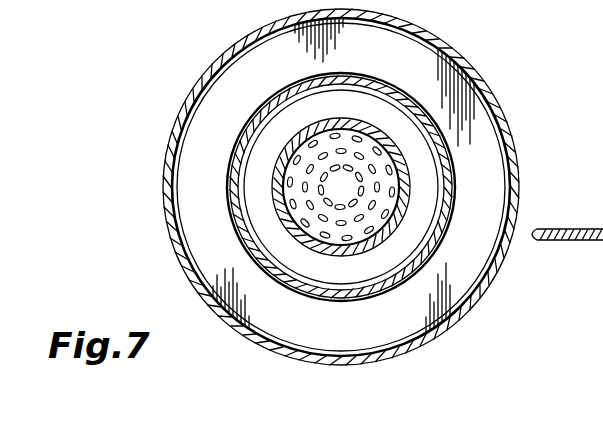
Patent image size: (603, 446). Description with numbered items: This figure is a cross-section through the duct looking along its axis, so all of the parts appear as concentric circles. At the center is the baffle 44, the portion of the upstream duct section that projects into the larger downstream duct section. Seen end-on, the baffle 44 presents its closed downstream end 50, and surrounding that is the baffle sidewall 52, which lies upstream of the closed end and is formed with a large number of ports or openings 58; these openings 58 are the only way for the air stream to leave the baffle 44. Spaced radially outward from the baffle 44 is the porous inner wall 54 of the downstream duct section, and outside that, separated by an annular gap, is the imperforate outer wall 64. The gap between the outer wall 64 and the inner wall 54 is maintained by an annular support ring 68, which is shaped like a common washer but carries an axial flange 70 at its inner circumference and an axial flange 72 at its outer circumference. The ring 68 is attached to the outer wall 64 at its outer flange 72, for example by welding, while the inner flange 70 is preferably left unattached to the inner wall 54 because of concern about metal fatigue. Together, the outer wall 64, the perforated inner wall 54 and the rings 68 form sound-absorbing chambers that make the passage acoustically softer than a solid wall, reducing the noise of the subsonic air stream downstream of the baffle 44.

The baffle 44 is at (404, 150).
The closed downstream end 50 is at (343, 186).
The sidewall 52 is at (411, 163).
The inner wall 54 is at (237, 222).
The ports or openings 58 is at (347, 253).
The outer wall 64 is at (197, 89).
The support ring 68 is at (205, 173).
The inner flange 70 is at (228, 196).
The outer flange 72 is at (230, 71).